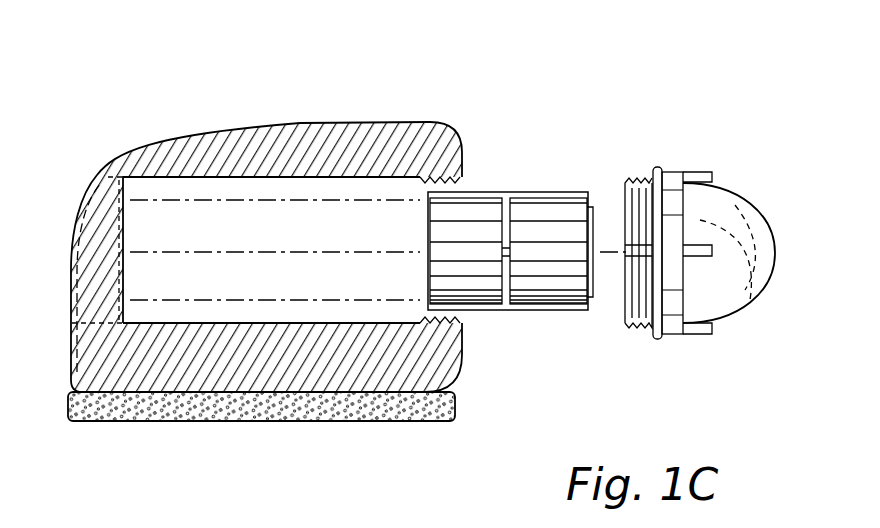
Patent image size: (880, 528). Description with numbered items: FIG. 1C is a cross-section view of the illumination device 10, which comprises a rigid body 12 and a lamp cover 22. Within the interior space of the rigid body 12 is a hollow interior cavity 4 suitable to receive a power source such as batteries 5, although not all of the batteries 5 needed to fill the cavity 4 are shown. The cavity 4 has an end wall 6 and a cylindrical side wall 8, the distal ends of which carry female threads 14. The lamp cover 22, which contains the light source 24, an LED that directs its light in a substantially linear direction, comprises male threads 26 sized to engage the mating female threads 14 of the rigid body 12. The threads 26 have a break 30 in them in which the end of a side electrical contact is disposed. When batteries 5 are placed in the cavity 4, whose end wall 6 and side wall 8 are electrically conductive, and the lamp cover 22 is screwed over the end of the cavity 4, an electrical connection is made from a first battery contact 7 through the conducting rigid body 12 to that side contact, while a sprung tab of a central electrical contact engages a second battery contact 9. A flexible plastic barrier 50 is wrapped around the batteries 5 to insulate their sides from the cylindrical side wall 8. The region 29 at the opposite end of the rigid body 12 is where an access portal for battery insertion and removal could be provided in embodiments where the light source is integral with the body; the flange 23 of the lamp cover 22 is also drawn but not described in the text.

The illumination device 10 is at (420, 221).
The rigid body 12 is at (112, 156).
The region 29 is at (80, 214).
The end wall 6 is at (310, 196).
The cylindrical side wall 8 is at (385, 177).
The female threads 14 is at (461, 192).
The flexible plastic barrier 50 is at (511, 197).
The first battery contact 7 is at (487, 198).
The second battery contact 9 is at (560, 196).
The hollow interior cavity 4 is at (467, 303).
The batteries 5 is at (553, 303).
The male threads 26 is at (632, 184).
The flange 23 is at (662, 166).
The lamp cover 22 is at (733, 189).
The light source 24 is at (770, 214).
The break 30 is at (626, 253).